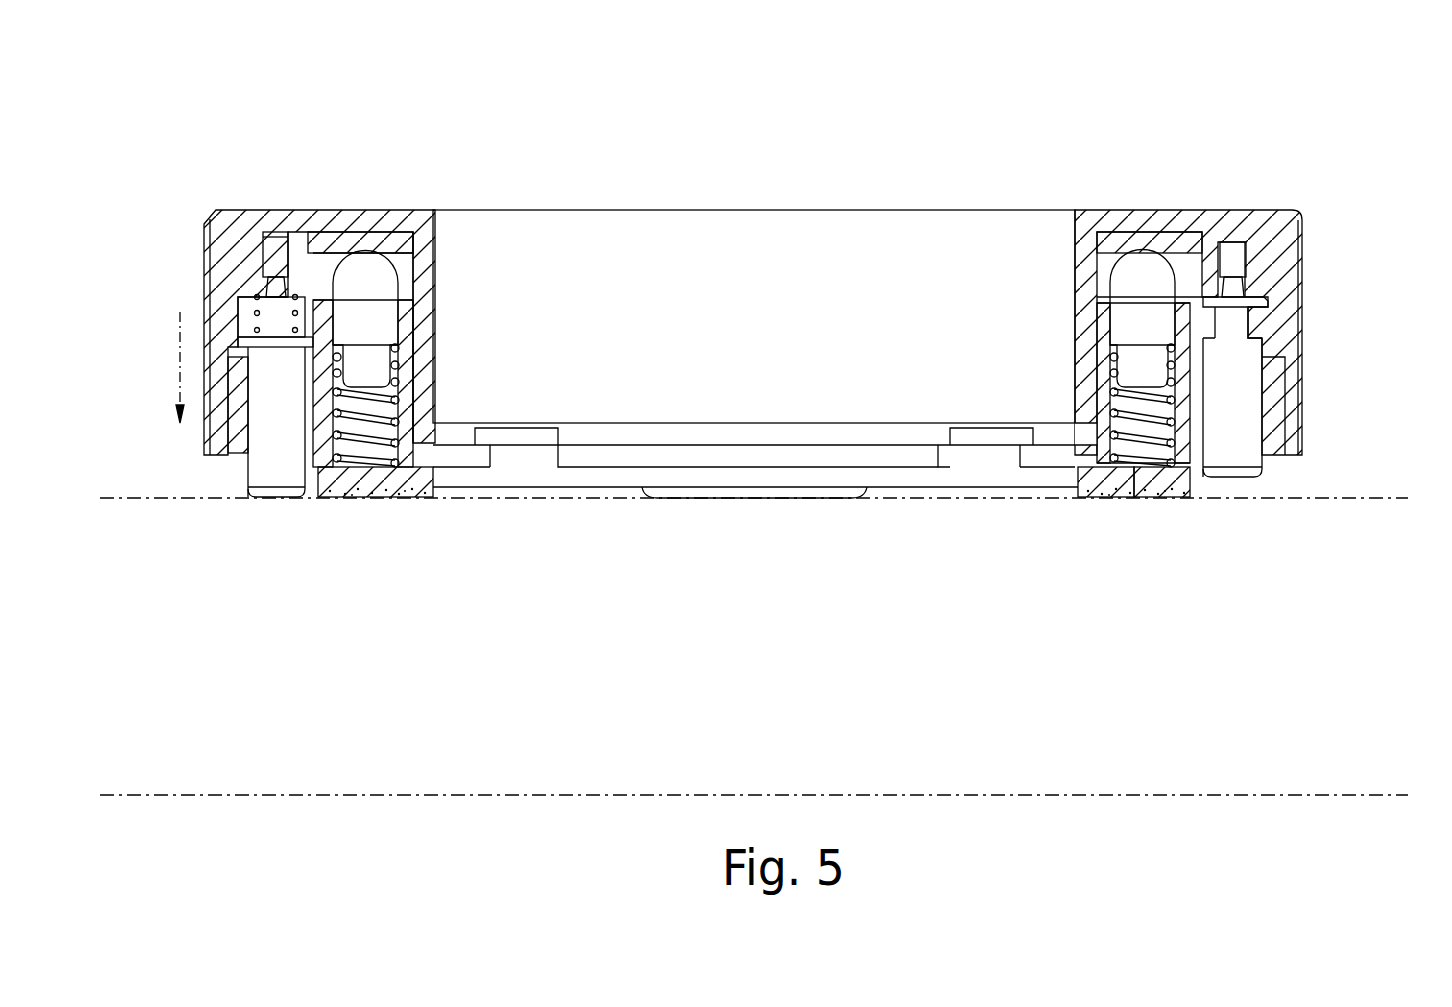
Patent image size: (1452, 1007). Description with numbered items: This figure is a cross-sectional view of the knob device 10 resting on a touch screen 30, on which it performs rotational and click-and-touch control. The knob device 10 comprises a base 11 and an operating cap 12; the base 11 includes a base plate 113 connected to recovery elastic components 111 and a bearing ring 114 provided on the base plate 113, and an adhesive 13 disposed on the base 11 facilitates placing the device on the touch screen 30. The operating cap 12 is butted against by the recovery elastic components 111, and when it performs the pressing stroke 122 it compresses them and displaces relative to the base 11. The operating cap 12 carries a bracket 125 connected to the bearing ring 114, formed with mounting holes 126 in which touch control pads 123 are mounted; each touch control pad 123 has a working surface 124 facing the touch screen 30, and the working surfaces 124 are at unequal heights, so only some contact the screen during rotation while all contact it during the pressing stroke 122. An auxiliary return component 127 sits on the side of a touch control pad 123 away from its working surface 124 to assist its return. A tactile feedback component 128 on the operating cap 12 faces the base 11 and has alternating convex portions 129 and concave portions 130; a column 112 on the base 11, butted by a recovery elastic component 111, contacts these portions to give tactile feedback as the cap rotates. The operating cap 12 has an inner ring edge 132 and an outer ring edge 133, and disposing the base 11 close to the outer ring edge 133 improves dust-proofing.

The knob device 10 is at (766, 195).
The base 11 is at (1121, 674).
The operating cap 12 is at (365, 210).
The adhesive 13 is at (375, 497).
The touch screen 30 is at (637, 795).
The recovery elastic component 111 is at (1163, 432).
The column 112 is at (1203, 234).
The base plate 113 is at (1143, 480).
The bearing ring 114 is at (1093, 457).
The pressing stroke 122 is at (180, 343).
The touch control pad 123 is at (1230, 357).
The working surface 124 is at (277, 498).
The bracket 125 is at (1290, 358).
The mounting hole 126 is at (1302, 400).
The auxiliary return component 127 is at (240, 317).
The tactile feedback component 128 is at (1185, 222).
The convex portion 129 is at (1110, 235).
The concave portion 130 is at (1150, 270).
The inner ring edge 132 is at (440, 262).
The outer ring edge 133 is at (207, 235).